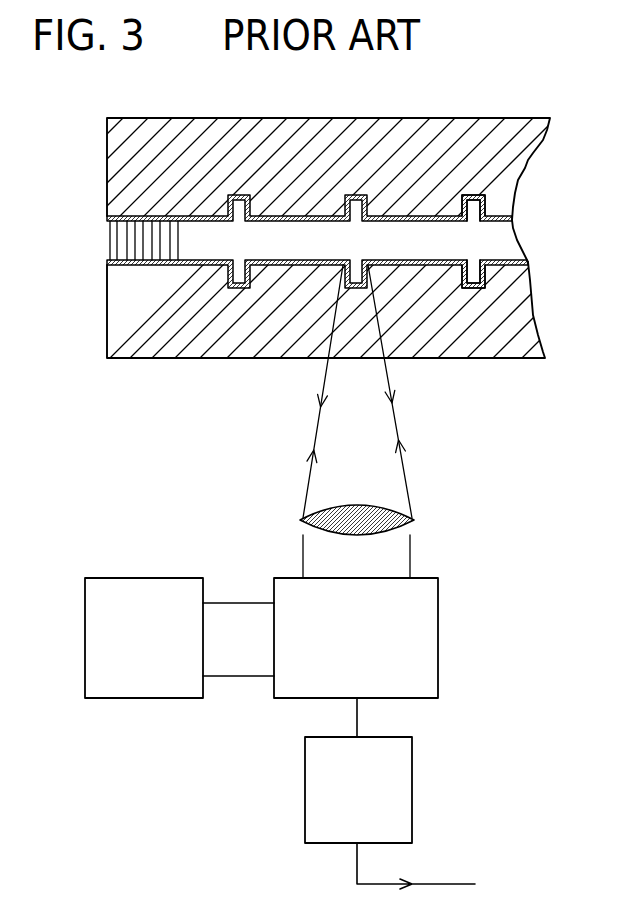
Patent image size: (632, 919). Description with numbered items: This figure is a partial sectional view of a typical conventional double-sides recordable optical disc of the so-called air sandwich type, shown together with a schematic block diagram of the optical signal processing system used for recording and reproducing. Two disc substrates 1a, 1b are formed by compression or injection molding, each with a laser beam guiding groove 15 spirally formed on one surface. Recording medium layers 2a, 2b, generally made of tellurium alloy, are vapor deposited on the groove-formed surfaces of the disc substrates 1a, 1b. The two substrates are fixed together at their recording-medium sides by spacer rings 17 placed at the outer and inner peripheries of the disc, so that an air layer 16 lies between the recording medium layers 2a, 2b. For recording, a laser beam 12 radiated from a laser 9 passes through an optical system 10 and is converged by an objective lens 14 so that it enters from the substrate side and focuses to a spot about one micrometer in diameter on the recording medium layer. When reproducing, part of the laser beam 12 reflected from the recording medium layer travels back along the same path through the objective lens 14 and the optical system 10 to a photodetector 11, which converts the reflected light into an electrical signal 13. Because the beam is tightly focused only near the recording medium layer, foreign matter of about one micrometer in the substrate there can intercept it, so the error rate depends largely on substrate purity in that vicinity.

The disc substrate 1a is at (115, 150).
The disc substrate 1b is at (117, 332).
The recording medium layer 2a is at (107, 219).
The recording medium layer 2b is at (107, 263).
The laser beam guiding groove 15 is at (482, 192).
The air layer 16 is at (513, 228).
The spacer rings 17 is at (115, 240).
The laser beam 12 is at (308, 477).
The objective lens 14 is at (398, 518).
The laser 9 is at (107, 578).
The optical system 10 is at (440, 592).
The photodetector 11 is at (413, 769).
The electrical signal 13 is at (433, 872).